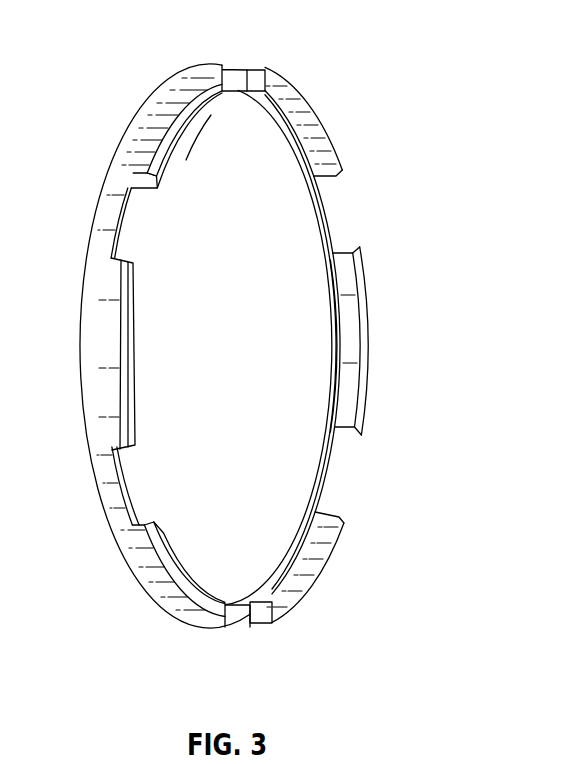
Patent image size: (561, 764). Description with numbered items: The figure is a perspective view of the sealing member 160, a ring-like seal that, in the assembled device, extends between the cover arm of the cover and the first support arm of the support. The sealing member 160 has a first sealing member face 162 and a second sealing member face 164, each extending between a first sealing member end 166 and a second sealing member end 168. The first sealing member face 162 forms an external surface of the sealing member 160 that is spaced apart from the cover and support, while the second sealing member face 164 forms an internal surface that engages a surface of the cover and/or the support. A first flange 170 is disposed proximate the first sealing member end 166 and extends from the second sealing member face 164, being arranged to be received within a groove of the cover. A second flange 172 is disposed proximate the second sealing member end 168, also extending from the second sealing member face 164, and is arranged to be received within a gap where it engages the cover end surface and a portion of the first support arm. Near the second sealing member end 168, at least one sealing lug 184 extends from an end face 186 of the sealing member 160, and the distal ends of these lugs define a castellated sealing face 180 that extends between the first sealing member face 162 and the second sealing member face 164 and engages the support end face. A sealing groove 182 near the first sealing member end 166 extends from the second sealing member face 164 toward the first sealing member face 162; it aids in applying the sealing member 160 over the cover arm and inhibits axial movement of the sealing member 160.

The sealing member 160 is at (346, 60).
The first sealing member face 162 is at (143, 116).
The second sealing member face 164 is at (310, 157).
The first sealing member end 166 is at (112, 165).
The second sealing member end 168 is at (170, 143).
The first flange 170 is at (335, 330).
The second flange 172 is at (352, 318).
The castellated sealing face 180 is at (158, 192).
The sealing groove 182 is at (305, 533).
The sealing lug 184 is at (183, 79).
The end face 186 is at (117, 233).